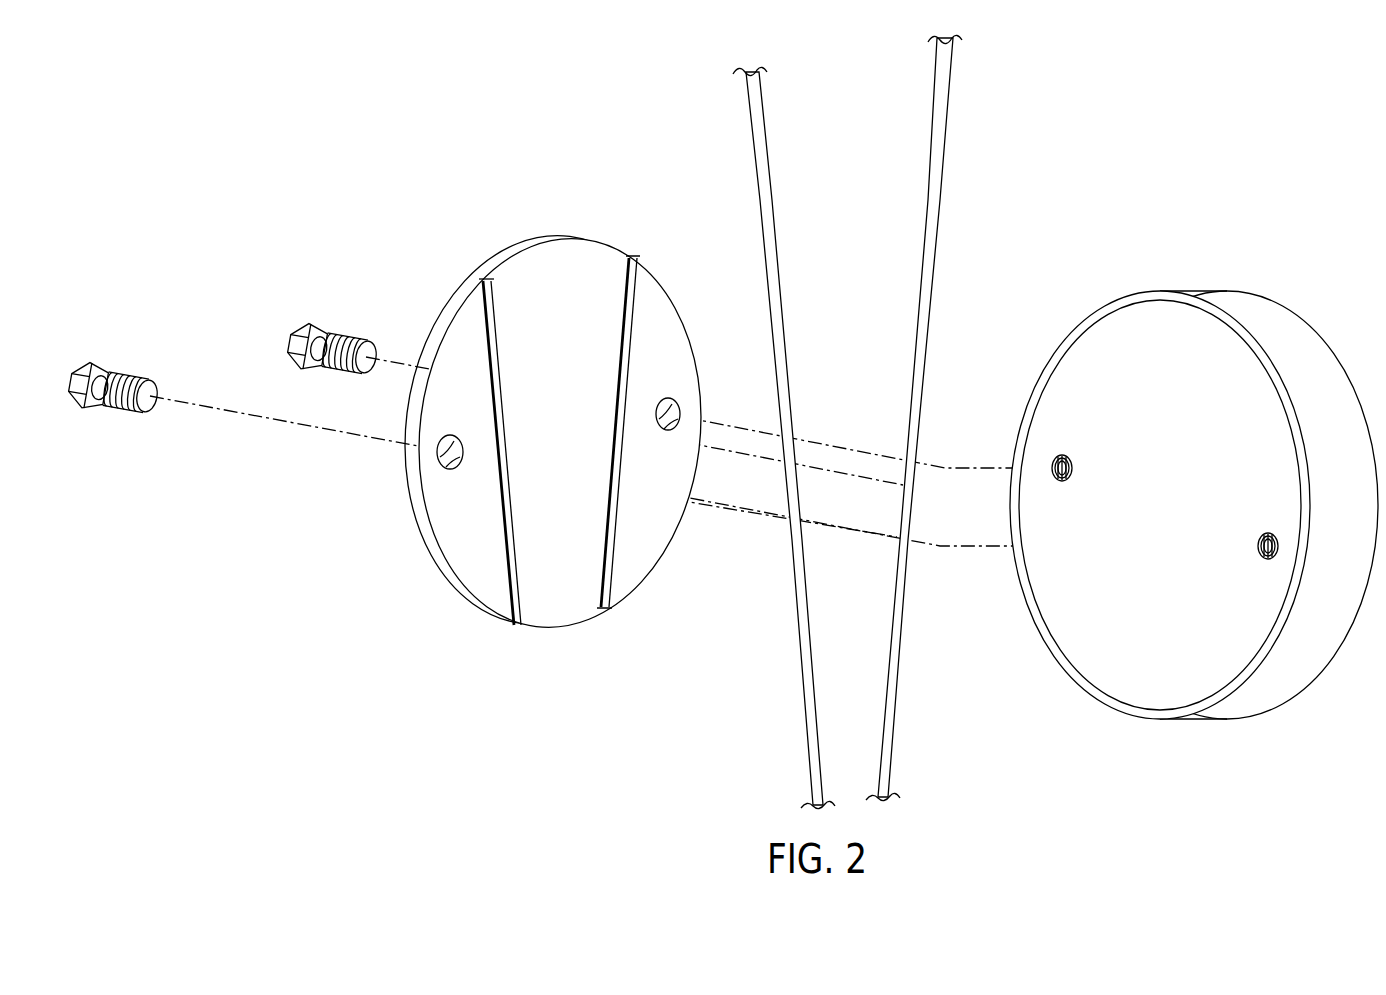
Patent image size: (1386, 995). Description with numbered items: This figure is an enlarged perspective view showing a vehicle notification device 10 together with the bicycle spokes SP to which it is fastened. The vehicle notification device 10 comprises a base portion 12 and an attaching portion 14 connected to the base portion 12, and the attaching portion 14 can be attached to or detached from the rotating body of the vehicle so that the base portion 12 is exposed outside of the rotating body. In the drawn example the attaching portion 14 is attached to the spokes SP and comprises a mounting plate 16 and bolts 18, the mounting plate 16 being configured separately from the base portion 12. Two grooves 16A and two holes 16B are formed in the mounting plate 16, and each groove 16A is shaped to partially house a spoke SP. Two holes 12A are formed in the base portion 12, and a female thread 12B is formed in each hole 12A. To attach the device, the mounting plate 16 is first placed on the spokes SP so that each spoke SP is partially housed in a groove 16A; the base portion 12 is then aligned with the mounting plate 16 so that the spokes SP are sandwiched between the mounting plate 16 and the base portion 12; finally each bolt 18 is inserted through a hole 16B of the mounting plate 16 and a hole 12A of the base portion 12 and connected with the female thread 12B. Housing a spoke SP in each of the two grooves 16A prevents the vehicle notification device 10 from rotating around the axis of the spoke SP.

The vehicle notification device 10 is at (1243, 168).
The base portion 12 is at (1104, 302).
The hole 12A is at (1075, 482).
The female thread 12B is at (1053, 457).
The attaching portion 14 is at (238, 548).
The mounting plate 16 is at (462, 602).
The groove 16A is at (486, 281).
The hole 16B is at (439, 460).
The bolt 18 is at (95, 368).
The spoke SP is at (759, 118).